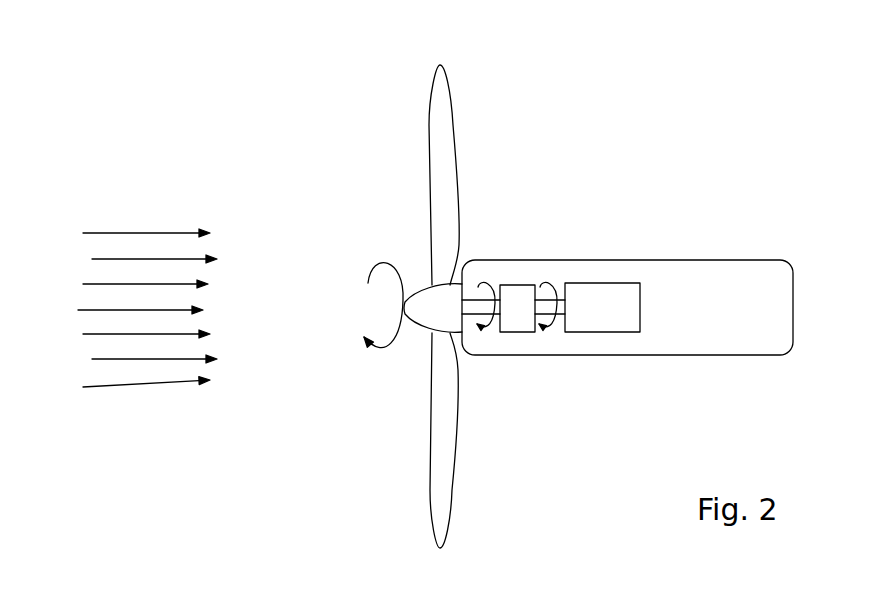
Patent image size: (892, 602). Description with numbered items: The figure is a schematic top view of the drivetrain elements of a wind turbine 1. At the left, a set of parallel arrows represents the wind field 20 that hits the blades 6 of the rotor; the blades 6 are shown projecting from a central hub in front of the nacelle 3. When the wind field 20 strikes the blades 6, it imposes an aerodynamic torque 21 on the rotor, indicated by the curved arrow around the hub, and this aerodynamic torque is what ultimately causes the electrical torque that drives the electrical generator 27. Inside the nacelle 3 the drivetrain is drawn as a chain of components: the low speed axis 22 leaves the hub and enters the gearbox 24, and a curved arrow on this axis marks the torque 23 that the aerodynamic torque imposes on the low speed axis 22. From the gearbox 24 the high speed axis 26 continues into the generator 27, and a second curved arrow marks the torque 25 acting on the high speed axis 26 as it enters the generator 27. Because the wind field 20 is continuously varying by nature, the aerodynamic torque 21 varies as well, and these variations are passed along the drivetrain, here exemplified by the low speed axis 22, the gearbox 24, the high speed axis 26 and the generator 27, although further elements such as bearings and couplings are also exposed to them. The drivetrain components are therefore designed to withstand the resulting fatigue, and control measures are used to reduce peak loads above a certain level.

The wind turbine 1 is at (657, 110).
The wind field 20 is at (154, 189).
The blades 6 is at (450, 113).
The aerodynamic torque 21 is at (383, 350).
The nacelle 3 is at (737, 260).
The low speed axis 22 is at (470, 303).
The torque 23 is at (490, 317).
The gearbox 24 is at (527, 332).
The torque 25 is at (546, 285).
The high speed axis 26 is at (558, 300).
The electrical generator 27 is at (622, 285).